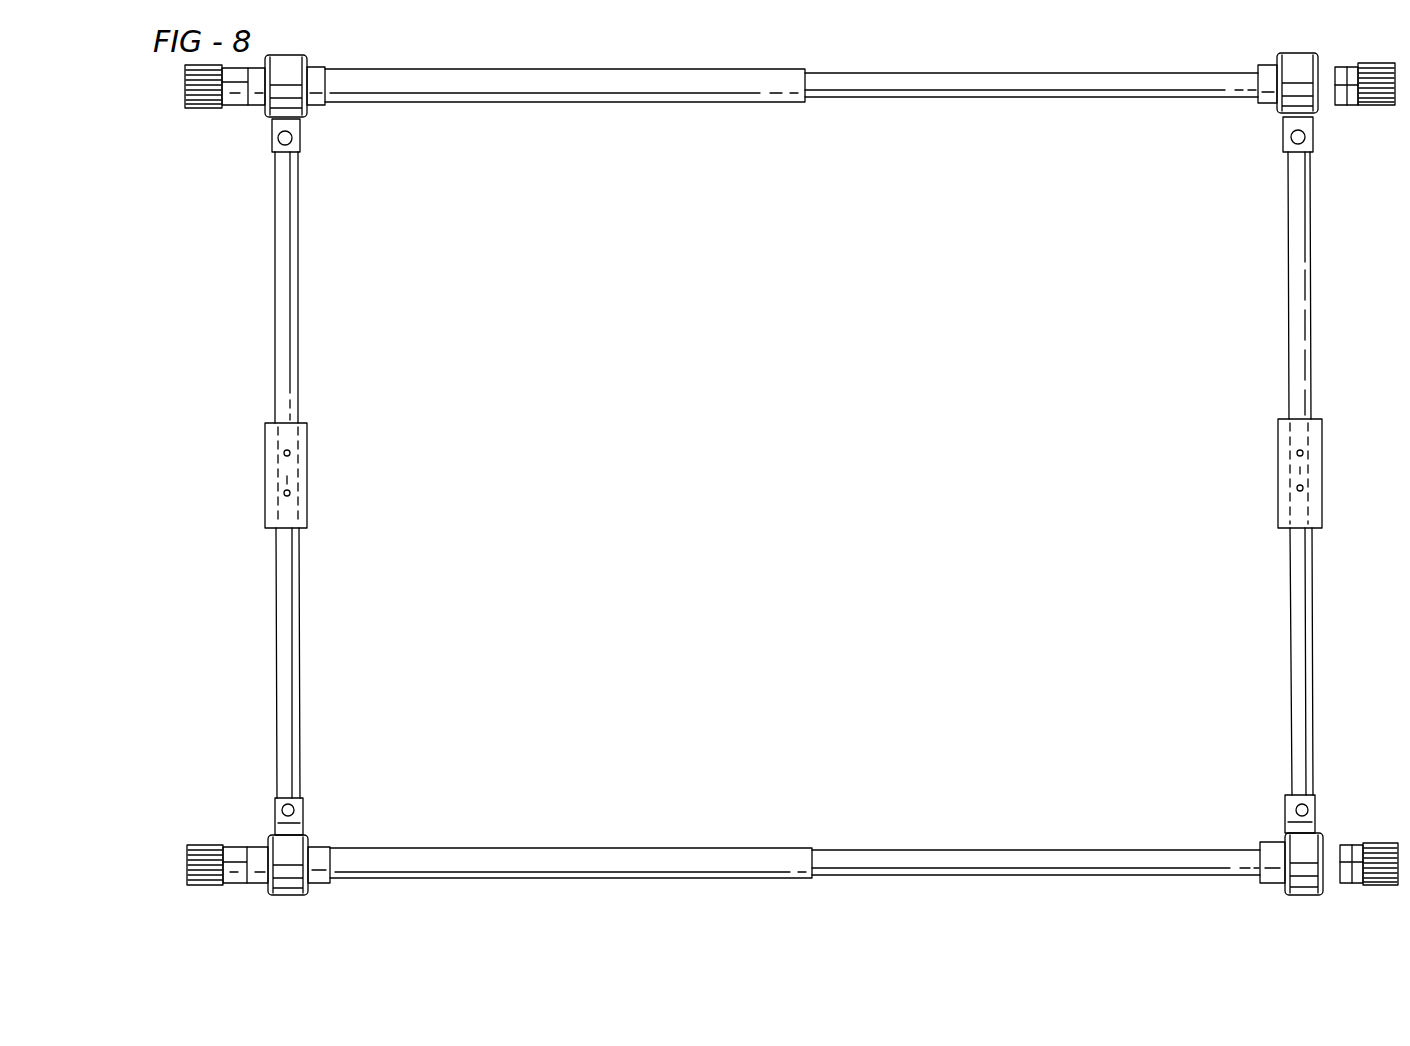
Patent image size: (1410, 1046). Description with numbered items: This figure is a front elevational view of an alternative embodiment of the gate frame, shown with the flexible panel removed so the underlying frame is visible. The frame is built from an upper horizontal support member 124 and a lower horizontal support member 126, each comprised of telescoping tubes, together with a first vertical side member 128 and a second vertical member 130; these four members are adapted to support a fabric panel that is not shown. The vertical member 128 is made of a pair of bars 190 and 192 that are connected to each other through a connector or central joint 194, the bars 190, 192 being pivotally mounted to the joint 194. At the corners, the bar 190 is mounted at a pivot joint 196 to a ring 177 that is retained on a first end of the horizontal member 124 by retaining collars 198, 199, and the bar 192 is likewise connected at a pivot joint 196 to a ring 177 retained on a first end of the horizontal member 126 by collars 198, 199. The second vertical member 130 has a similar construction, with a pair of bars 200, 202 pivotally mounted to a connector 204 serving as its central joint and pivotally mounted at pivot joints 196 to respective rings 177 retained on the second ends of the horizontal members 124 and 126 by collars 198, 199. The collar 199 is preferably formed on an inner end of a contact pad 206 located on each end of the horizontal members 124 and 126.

The upper horizontal support member 124 is at (830, 70).
The lower horizontal support member 126 is at (836, 882).
The vertical side member 128 is at (321, 475).
The second vertical member 130 is at (1264, 473).
The ring 177 is at (283, 112).
The bar 190 is at (287, 300).
The bar 192 is at (293, 635).
The connector or central joint 194 is at (302, 450).
The pivot joint 196 is at (292, 142).
The retaining collar 198 is at (313, 103).
The retaining collar 199 is at (255, 108).
The bar 200 is at (1295, 275).
The bar 202 is at (1297, 648).
The connector or central joint 204 is at (1278, 450).
The contact pad 206 is at (184, 88).